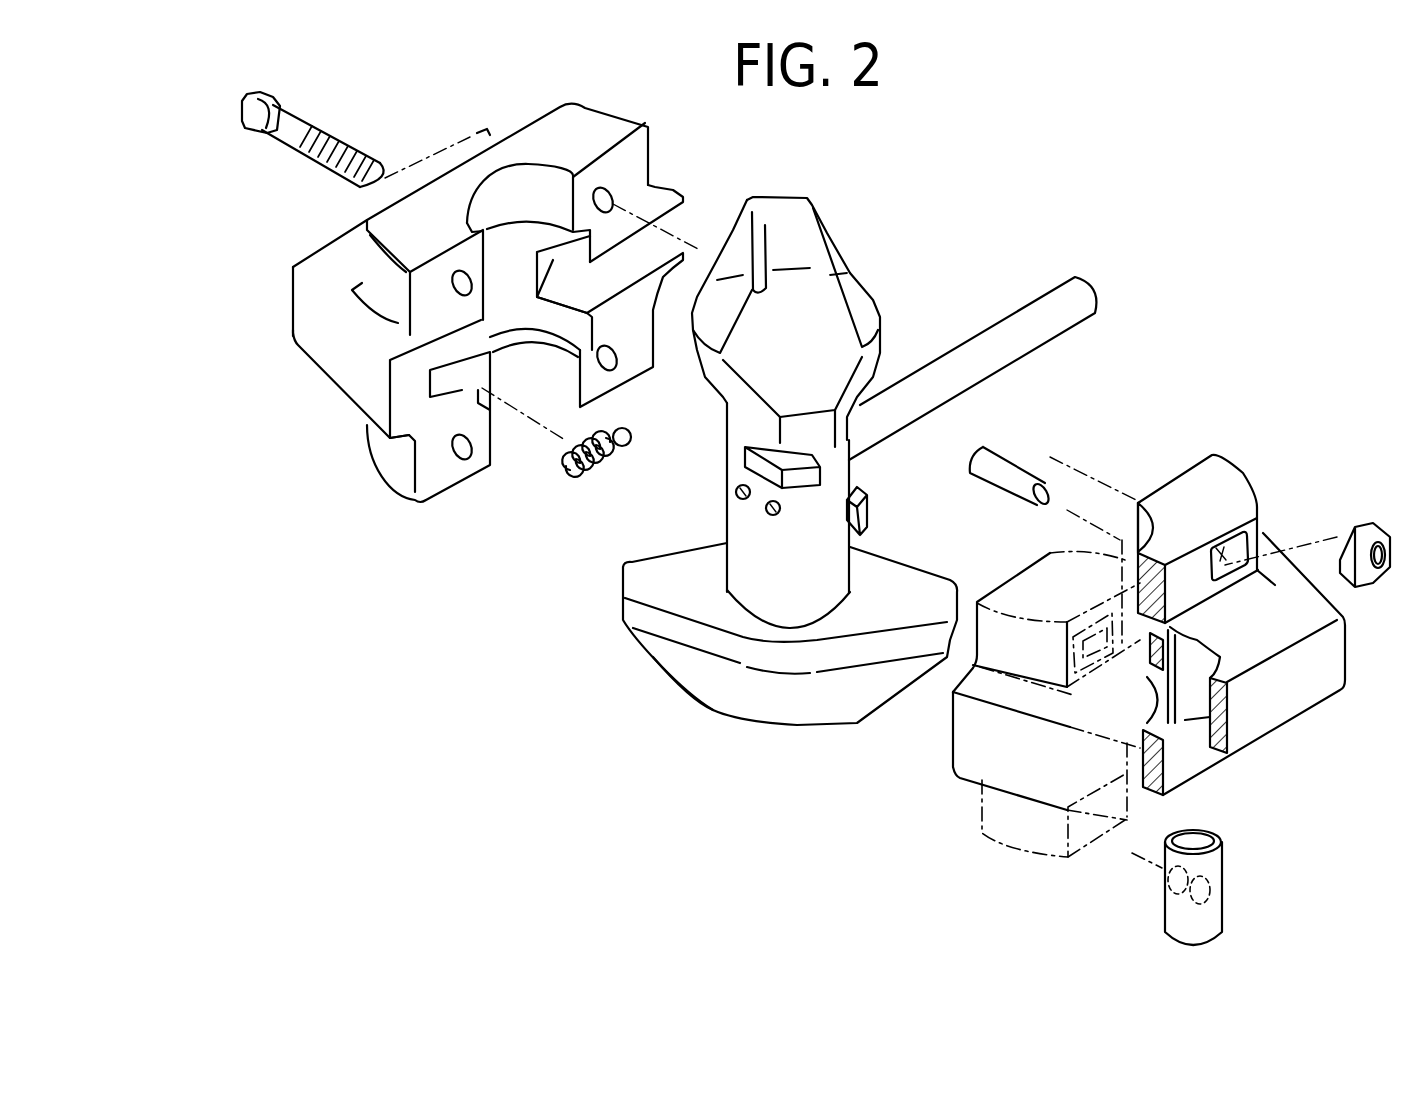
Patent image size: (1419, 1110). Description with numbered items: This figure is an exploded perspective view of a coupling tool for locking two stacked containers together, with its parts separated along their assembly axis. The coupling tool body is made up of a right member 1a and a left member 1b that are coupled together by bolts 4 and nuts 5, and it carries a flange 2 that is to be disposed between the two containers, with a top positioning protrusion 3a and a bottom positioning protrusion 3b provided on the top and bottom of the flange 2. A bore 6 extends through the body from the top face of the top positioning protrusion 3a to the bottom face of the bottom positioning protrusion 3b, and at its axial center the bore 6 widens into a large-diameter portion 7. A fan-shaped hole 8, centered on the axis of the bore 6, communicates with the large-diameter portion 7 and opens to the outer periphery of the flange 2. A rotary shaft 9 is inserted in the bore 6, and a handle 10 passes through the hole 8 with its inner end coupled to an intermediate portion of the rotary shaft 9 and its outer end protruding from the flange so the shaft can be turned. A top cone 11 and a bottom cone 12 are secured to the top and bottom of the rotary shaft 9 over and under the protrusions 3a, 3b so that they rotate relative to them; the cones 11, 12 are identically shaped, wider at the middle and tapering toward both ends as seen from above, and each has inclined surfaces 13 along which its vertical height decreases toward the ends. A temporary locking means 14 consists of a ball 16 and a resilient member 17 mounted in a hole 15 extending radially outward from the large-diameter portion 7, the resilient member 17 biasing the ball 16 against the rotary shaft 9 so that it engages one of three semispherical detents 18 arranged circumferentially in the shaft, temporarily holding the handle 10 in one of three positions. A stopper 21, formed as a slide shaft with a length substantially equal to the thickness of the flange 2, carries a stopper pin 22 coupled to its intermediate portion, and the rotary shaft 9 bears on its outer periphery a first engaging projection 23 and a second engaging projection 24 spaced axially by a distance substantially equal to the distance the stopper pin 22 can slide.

The right member 1a is at (613, 122).
The left member 1b is at (1237, 467).
The flange 2 is at (290, 283).
The top positioning protrusion 3a is at (1180, 487).
The bottom positioning protrusion 3b is at (390, 462).
The bolts 4 is at (312, 135).
The nuts 5 is at (1372, 527).
The bore 6 is at (507, 190).
The large-diameter portion 7 is at (480, 330).
The hole 8 is at (650, 253).
The rotary shaft 9 is at (747, 595).
The handle 10 is at (1035, 295).
The top cone 11 is at (797, 240).
The bottom cone 12 is at (777, 723).
The inclined surfaces 13 is at (737, 685).
The temporary locking means 14 is at (563, 468).
The hole 15 is at (453, 377).
The ball 16 is at (624, 432).
The resilient member 17 is at (603, 473).
The detents 18 is at (768, 513).
The stopper 21 is at (1227, 877).
The stopper pin 22 is at (1000, 470).
The first engaging projection 23 is at (818, 473).
The second engaging projection 24 is at (867, 510).